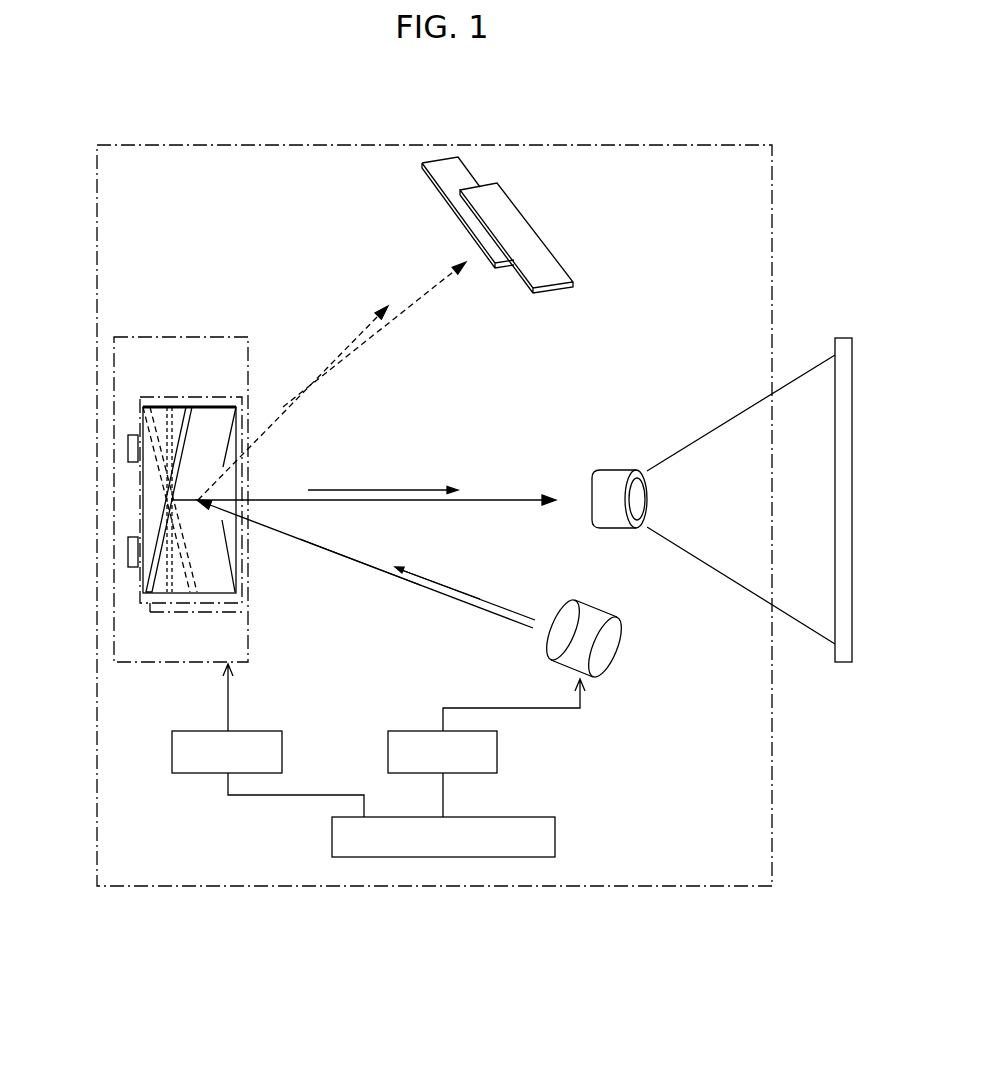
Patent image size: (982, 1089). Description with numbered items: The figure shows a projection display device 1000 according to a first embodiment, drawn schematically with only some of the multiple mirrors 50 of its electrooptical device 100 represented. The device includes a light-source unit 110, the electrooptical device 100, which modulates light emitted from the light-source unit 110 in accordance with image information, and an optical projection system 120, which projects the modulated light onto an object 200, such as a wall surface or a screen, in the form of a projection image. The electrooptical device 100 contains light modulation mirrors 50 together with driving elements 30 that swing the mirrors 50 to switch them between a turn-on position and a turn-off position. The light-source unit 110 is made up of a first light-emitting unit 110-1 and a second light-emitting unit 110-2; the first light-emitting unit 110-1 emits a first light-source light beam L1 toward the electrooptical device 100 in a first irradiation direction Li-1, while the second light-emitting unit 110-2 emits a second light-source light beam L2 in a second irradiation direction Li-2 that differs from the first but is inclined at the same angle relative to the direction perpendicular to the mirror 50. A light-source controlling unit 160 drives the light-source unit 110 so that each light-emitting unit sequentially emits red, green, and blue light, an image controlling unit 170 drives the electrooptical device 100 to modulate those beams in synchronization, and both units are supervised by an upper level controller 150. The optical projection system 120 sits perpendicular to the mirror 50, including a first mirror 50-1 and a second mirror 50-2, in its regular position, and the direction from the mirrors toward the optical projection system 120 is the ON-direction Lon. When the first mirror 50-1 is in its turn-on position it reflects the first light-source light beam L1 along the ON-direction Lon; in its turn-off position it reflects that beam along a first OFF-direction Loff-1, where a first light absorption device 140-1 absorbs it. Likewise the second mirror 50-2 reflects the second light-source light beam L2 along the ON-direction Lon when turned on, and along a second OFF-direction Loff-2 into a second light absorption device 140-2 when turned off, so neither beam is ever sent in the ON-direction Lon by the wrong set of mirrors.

The projection display device 1000 is at (744, 145).
The driving elements 30 is at (128, 553).
The mirrors 50 is at (195, 506).
The first mirror 50-1 is at (162, 470).
The second mirror 50-2 is at (150, 612).
The electrooptical device 100 is at (249, 588).
The light-source unit 110 is at (560, 652).
The first light-emitting unit 110-1 is at (617, 619).
The second light-emitting unit 110-2 is at (600, 598).
The optical projection system 120 is at (623, 470).
The first light absorption device 140-1 is at (547, 245).
The second light absorption device 140-2 is at (460, 172).
The upper level controller 150 is at (555, 838).
The light-source controlling unit 160 is at (406, 731).
The image controlling unit 170 is at (265, 731).
The object 200 is at (845, 662).
The first light-source light beam L1 is at (360, 569).
The second light-source light beam L2 is at (439, 571).
The ON-direction Lon is at (364, 493).
The first OFF-direction Loff-1 is at (376, 334).
The second OFF-direction Loff-2 is at (293, 403).
The first irradiation direction Li-1 is at (365, 566).
The second irradiation direction Li-2 is at (465, 593).